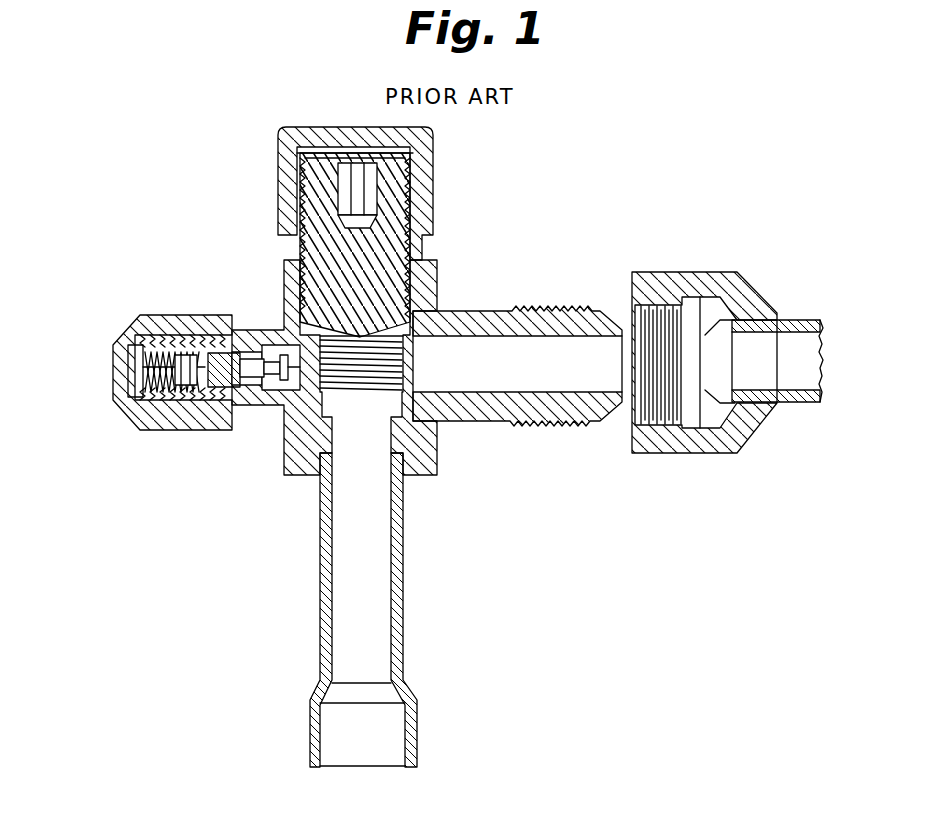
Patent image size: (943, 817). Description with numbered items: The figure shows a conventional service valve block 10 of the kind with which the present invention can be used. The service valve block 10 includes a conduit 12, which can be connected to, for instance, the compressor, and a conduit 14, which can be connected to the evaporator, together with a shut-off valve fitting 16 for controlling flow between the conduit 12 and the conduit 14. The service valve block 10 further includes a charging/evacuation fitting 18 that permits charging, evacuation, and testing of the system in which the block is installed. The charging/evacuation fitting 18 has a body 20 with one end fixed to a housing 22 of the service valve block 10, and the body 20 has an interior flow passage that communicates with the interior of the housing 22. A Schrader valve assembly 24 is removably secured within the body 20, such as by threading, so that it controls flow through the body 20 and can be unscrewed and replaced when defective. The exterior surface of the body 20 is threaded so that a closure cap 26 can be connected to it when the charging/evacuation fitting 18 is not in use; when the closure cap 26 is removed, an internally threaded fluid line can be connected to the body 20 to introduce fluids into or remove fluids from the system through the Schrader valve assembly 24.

The service valve block 10 is at (582, 176).
The conduit 12 is at (403, 548).
The conduit 14 is at (553, 420).
The shut-off valve fitting 16 is at (299, 122).
The charging/evacuation fitting 18 is at (180, 366).
The body 20 is at (270, 407).
The housing 22 is at (281, 267).
The Schrader valve assembly 24 is at (219, 418).
The closure cap 26 is at (133, 410).